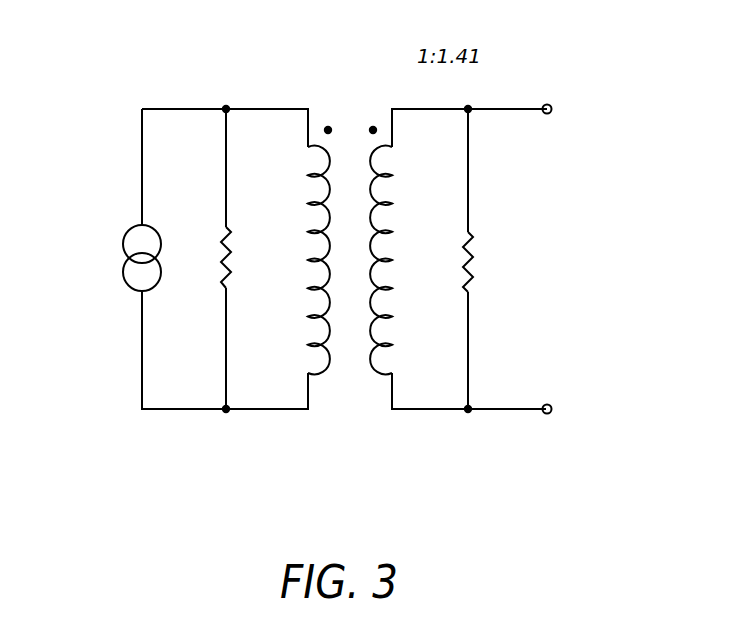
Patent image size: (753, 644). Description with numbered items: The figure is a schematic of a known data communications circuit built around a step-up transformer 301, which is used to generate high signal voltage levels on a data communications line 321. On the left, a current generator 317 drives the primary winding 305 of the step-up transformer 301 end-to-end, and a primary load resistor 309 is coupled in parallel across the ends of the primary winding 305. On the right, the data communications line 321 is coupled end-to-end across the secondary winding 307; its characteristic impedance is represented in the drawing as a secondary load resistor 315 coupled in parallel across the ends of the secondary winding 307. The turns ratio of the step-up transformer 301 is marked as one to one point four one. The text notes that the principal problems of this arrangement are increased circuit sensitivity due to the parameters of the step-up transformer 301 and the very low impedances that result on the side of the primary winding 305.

The step-up transformer 301 is at (352, 424).
The primary winding 305 is at (314, 262).
The secondary winding 307 is at (393, 260).
The primary load resistor 309 is at (232, 250).
The secondary load resistor 315 is at (470, 265).
The current generator 317 is at (122, 273).
The data communications line 321 is at (572, 158).